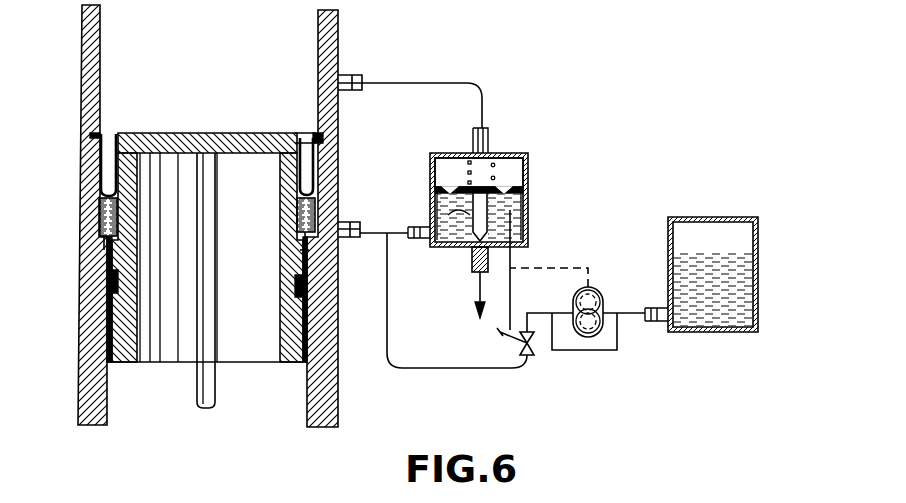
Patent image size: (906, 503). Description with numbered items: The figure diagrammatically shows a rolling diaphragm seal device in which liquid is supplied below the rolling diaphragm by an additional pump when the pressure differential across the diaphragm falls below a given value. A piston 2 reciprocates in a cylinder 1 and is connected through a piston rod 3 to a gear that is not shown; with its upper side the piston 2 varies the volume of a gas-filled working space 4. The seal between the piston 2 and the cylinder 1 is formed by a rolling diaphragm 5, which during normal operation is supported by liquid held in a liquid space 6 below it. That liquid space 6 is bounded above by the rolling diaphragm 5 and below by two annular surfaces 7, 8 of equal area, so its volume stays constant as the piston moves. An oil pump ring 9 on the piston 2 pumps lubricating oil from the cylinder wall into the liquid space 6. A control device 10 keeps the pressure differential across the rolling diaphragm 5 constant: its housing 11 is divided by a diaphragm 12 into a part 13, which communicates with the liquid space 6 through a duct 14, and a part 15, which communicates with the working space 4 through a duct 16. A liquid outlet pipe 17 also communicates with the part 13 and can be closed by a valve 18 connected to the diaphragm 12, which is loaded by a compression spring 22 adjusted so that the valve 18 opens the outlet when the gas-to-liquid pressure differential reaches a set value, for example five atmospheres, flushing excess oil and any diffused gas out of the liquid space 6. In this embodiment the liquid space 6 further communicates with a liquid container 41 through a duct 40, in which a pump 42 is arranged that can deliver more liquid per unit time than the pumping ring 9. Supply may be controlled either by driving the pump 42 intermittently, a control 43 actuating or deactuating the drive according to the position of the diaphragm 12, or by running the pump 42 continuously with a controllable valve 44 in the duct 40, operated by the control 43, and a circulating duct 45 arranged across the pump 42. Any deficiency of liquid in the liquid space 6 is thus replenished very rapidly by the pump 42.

The cylinder 1 is at (92, 63).
The piston 2 is at (117, 322).
The piston rod 3 is at (203, 387).
The working space 4 is at (220, 81).
The rolling diaphragm 5 is at (103, 172).
The liquid space 6 is at (103, 213).
The annular surface 7 is at (95, 248).
The annular surface 8 is at (303, 258).
The oil pump ring 9 is at (306, 291).
The control device 10 is at (501, 170).
The housing 11 is at (530, 212).
The diaphragm 12 is at (512, 174).
The part 13 is at (434, 199).
The duct 14 is at (370, 227).
The part 15 is at (506, 163).
The duct 16 is at (482, 102).
The liquid outlet pipe 17 is at (478, 291).
The valve 18 is at (434, 217).
The compression spring 22 is at (468, 173).
The duct 40 is at (405, 369).
The liquid container 41 is at (710, 238).
The pump 42 is at (605, 328).
The control 43 is at (553, 266).
The controllable valve 44 is at (540, 348).
The circulating duct 45 is at (568, 352).